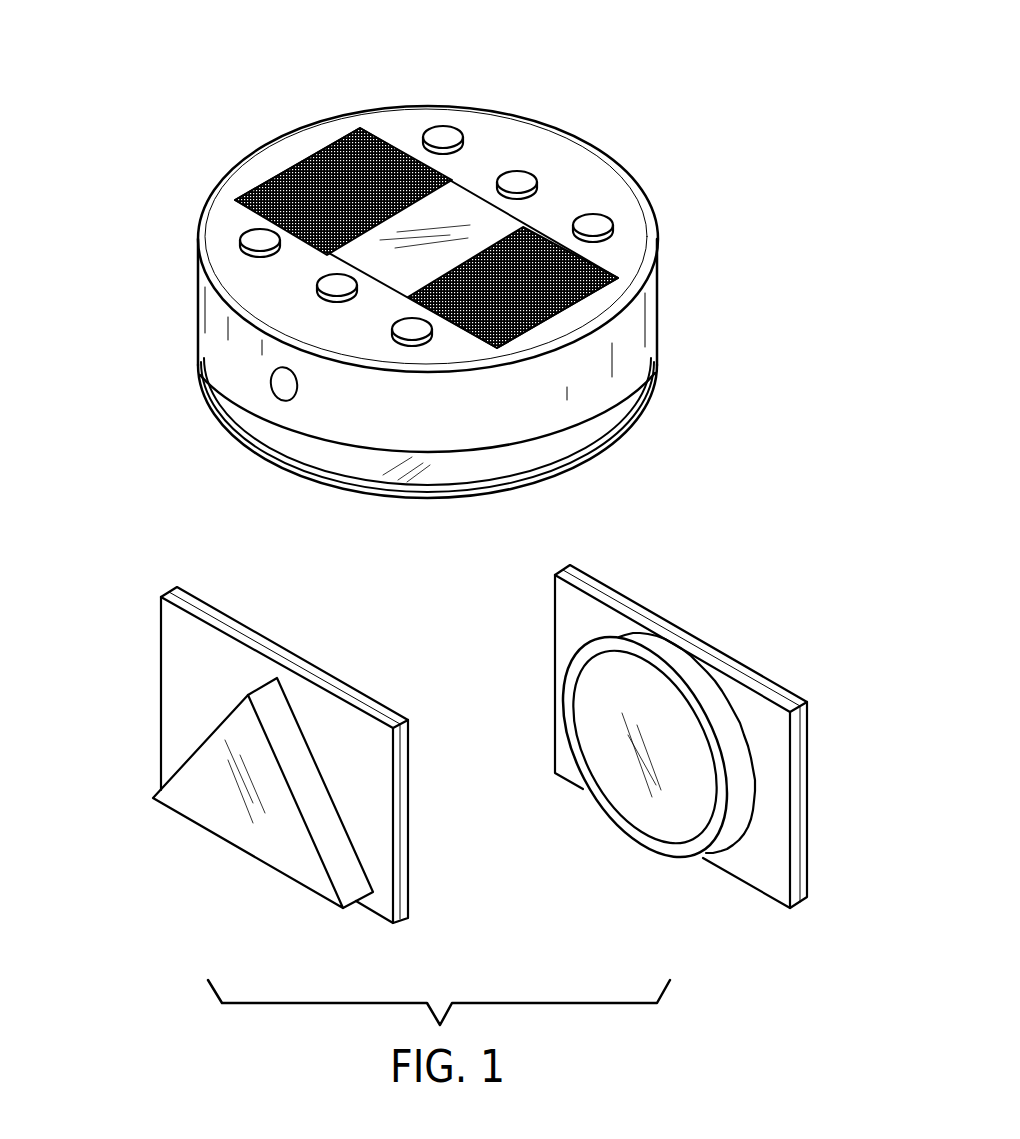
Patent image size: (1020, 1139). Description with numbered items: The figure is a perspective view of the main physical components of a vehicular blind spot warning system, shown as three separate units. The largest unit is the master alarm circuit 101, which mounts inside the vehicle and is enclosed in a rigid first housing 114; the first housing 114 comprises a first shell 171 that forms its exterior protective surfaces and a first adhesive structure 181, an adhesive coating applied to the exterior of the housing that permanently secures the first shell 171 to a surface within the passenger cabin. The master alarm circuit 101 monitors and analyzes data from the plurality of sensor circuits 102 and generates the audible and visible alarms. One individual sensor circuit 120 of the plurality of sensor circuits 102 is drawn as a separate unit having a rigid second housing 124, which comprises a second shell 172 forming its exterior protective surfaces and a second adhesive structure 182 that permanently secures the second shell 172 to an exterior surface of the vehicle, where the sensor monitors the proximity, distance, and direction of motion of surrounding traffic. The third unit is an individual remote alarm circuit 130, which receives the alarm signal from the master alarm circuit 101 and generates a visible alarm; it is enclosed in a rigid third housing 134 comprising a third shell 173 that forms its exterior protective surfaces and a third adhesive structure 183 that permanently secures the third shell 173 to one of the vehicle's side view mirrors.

The master alarm circuit 101 is at (455, 250).
The plurality of sensor circuits 102 is at (254, 366).
The first housing 114 is at (801, 314).
The first shell 171 is at (640, 307).
The first adhesive structure 181 is at (647, 400).
The individual sensor circuit 120 is at (272, 393).
The third housing 134 is at (212, 719).
The third adhesive structure 183 is at (193, 593).
The third shell 173 is at (173, 638).
The individual remote alarm circuit 130 is at (266, 883).
The second housing 124 is at (743, 735).
The second shell 172 is at (739, 683).
The second adhesive structure 182 is at (767, 678).